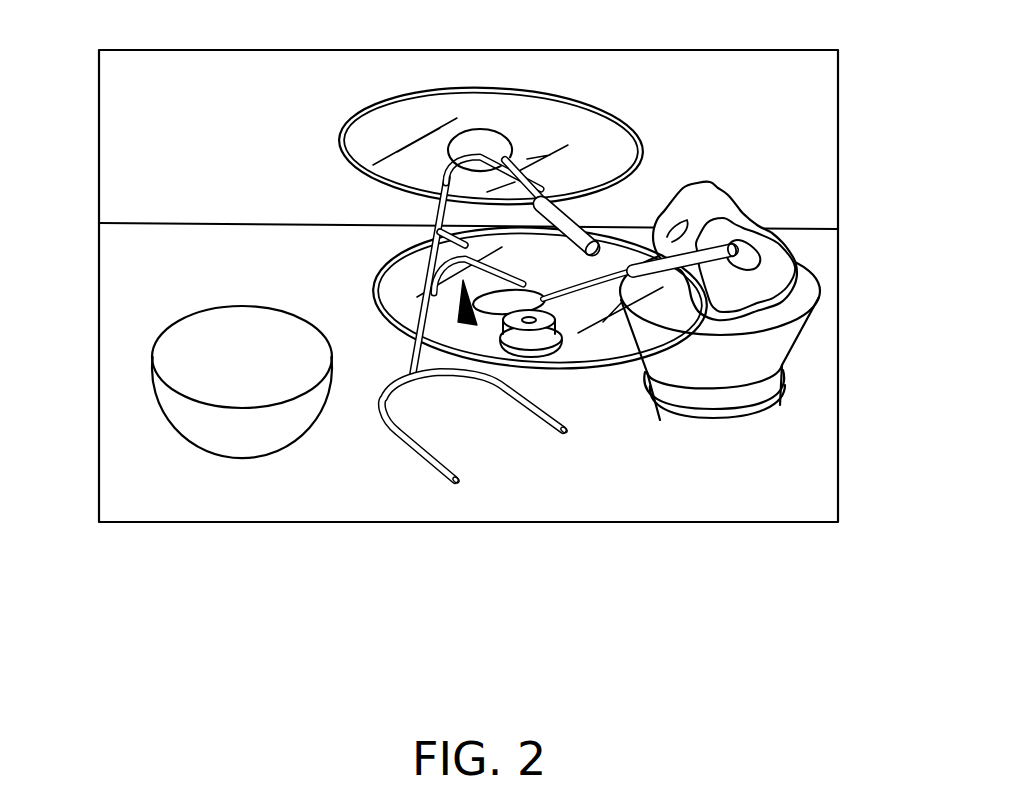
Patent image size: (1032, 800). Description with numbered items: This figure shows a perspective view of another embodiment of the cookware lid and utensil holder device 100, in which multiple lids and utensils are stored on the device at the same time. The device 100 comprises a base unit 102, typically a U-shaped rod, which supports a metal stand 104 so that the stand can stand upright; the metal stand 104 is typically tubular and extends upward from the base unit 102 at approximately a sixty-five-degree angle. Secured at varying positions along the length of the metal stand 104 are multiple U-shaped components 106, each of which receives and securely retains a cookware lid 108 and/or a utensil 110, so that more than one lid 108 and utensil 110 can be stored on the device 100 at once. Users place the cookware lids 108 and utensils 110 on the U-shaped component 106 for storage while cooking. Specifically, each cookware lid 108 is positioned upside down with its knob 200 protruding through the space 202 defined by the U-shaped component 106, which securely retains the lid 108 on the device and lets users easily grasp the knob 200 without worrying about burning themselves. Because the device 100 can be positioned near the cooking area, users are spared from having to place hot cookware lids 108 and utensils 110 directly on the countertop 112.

The cookware lid and utensil holder device 100 is at (693, 98).
The base unit 102 is at (440, 480).
The metal stand 104 is at (413, 365).
The U-shaped component 106 is at (462, 262).
The cookware lid 108 is at (520, 118).
The utensil 110 is at (688, 197).
The countertop 112 is at (627, 498).
The knob 200 is at (537, 345).
The space 202 is at (469, 322).